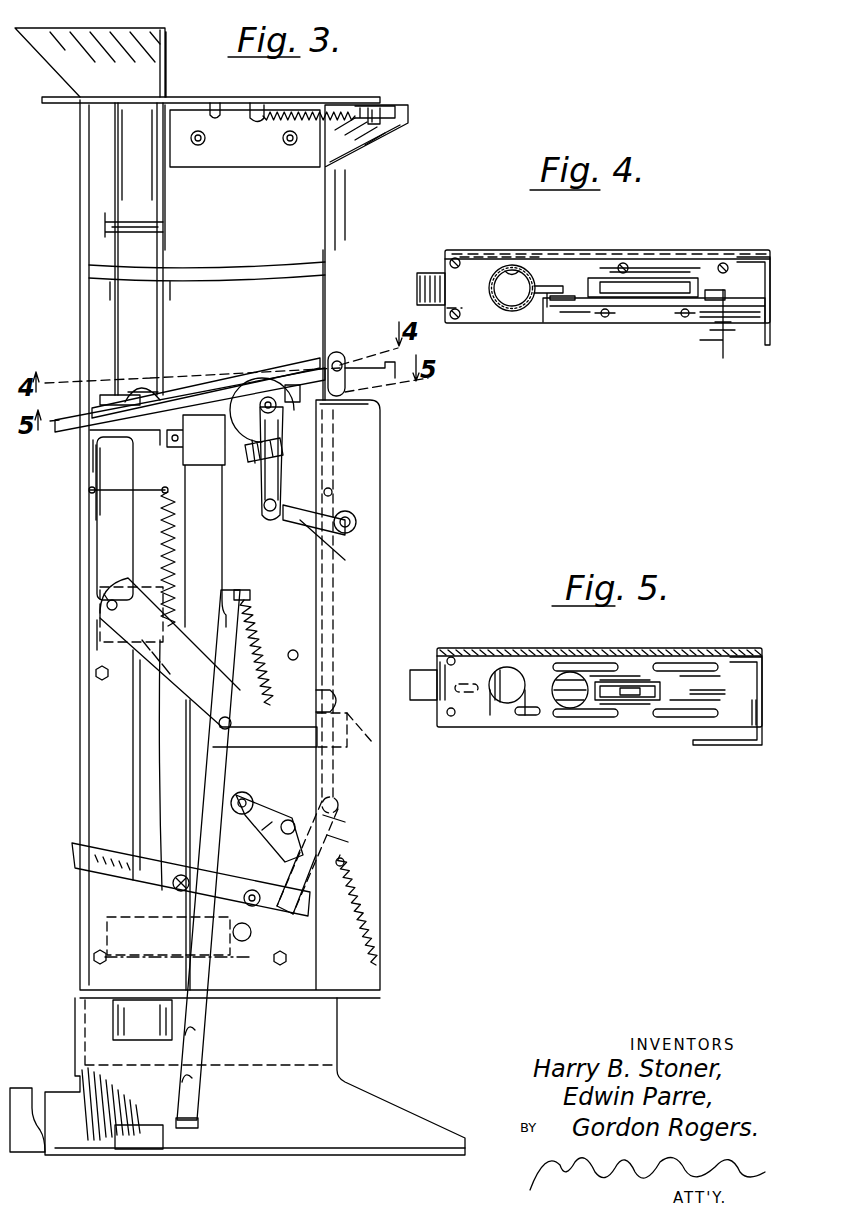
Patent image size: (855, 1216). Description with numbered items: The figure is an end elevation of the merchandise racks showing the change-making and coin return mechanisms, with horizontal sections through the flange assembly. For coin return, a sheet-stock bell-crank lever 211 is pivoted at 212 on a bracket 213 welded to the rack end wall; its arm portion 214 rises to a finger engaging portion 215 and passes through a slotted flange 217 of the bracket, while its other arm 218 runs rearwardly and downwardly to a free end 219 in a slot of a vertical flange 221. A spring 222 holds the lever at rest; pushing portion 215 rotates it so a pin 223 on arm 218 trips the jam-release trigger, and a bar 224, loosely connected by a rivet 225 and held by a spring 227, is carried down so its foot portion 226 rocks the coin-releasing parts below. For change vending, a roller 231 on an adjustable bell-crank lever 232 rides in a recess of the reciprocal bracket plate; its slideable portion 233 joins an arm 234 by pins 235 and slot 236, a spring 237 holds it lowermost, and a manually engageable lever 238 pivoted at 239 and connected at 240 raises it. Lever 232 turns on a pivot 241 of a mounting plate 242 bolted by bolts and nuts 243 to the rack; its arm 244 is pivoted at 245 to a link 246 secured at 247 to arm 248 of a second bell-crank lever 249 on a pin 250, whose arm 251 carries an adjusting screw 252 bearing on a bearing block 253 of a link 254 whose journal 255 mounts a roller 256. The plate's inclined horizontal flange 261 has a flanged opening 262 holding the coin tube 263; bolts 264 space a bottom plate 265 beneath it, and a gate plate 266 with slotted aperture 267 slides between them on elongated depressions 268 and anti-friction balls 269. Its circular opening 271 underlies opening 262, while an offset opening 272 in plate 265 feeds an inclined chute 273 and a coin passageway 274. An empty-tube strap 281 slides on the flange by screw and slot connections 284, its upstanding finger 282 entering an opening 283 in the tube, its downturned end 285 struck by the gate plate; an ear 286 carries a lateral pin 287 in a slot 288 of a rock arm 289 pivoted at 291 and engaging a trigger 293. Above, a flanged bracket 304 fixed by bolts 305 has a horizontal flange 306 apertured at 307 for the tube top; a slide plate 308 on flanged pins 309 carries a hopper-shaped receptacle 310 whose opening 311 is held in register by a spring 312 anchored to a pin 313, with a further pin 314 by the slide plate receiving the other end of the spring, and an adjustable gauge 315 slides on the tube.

In FIG. 3, the bell-crank lever 211 is at (92, 604).
In FIG. 3, the pivot 212 is at (105, 607).
In FIG. 3, the bracket 213 is at (97, 632).
In FIG. 3, the arm portion 214 is at (110, 533).
In FIG. 3, the finger engaging portion 215 is at (95, 487).
In FIG. 3, the flange 217 is at (105, 492).
In FIG. 3, the arm 218 is at (170, 680).
In FIG. 3, the free end 219 is at (350, 753).
In FIG. 3, the vertical flange 221 is at (353, 783).
In FIG. 3, the spring 222 is at (177, 580).
In FIG. 3, the pin 223 is at (302, 700).
In FIG. 3, the bar 224 is at (200, 1050).
In FIG. 3, the rivet 225 is at (222, 727).
In FIG. 3, the foot portion 226 is at (190, 1126).
In FIG. 3, the spring 227 is at (253, 632).
In FIG. 3, the roller 231 is at (279, 962).
In FIG. 3, the adjustable bell-crank lever 232 is at (278, 848).
In FIG. 3, the slideable portion 233 is at (300, 890).
In FIG. 3, the arm 234 is at (360, 845).
In FIG. 3, the pins 235 is at (347, 862).
In FIG. 3, the slot 236 is at (360, 823).
In FIG. 3, the spring 237 is at (378, 948).
In FIG. 3, the manually engageable lever 238 is at (93, 873).
In FIG. 3, the pivot 239 is at (181, 875).
In FIG. 3, the connection 240 is at (217, 912).
In FIG. 3, the pivot 241 is at (290, 820).
In FIG. 3, the mounting plate 242 is at (100, 783).
In FIG. 4, the mounting plate 242 is at (577, 253).
In FIG. 5, the mounting plate 242 is at (698, 657).
In FIG. 3, the bolts and nuts 243 is at (95, 676).
In FIG. 3, the arm 244 is at (266, 830).
In FIG. 3, the pivot connection 245 is at (231, 798).
In FIG. 3, the link 246 is at (290, 660).
In FIG. 3, the pivot 247 is at (357, 522).
In FIG. 3, the arm 248 is at (305, 527).
In FIG. 3, the second bell-crank lever 249 is at (308, 498).
In FIG. 3, the pin 250 is at (275, 515).
In FIG. 3, the arm 251 is at (264, 506).
In FIG. 3, the adjusting screw 252 is at (292, 362).
In FIG. 3, the bearing block 253 is at (278, 440).
In FIG. 3, the link 254 is at (293, 418).
In FIG. 3, the journal 255 is at (268, 397).
In FIG. 3, the roller 256 is at (292, 397).
In FIG. 4, the roller 256 is at (610, 277).
In FIG. 5, the roller 256 is at (648, 700).
In FIG. 3, the inclined horizontal flange 261 is at (95, 406).
In FIG. 3, the circular flanged opening 262 is at (117, 400).
In FIG. 3, the tube 263 is at (125, 292).
In FIG. 4, the tube 263 is at (500, 266).
In FIG. 4, the bolts 264 is at (457, 259).
In FIG. 3, the bottom plate 265 is at (93, 450).
In FIG. 5, the bottom plate 265 is at (451, 717).
In FIG. 3, the gate plate 266 is at (140, 395).
In FIG. 4, the gate plate 266 is at (432, 273).
In FIG. 5, the gate plate 266 is at (468, 672).
In FIG. 5, the slotted aperture 267 is at (645, 683).
In FIG. 5, the elongated depressions 268 is at (520, 716).
In FIG. 5, the anti-friction balls 269 is at (533, 792).
In FIG. 5, the circular opening 271 is at (512, 664).
In FIG. 5, the opening 272 is at (580, 706).
In FIG. 3, the inclined chute 273 is at (190, 452).
In FIG. 3, the coin passageway 274 is at (137, 748).
In FIG. 4, the strap 281 is at (677, 311).
In FIG. 3, the upstanding finger 282 is at (147, 405).
In FIG. 4, the upstanding finger 282 is at (553, 300).
In FIG. 4, the opening 283 is at (537, 282).
In FIG. 4, the screw and slot connections 284 is at (600, 316).
In FIG. 3, the downturned end 285 is at (400, 372).
In FIG. 4, the downturned end 285 is at (750, 303).
In FIG. 5, the downturned end 285 is at (755, 712).
In FIG. 4, the ear 286 is at (708, 290).
In FIG. 4, the lateral pin 287 is at (722, 358).
In FIG. 3, the slot 288 is at (340, 372).
In FIG. 3, the rock arm 289 is at (378, 398).
In FIG. 3, the pivot 291 is at (333, 492).
In FIG. 3, the trigger 293 is at (296, 652).
In FIG. 3, the flanged bracket 304 is at (315, 150).
In FIG. 3, the bolts 305 is at (285, 145).
In FIG. 3, the horizontal flange 306 is at (212, 103).
In FIG. 3, the aperture 307 is at (115, 115).
In FIG. 3, the slide plate 308 is at (266, 112).
In FIG. 3, the flanged pins 309 is at (378, 105).
In FIG. 3, the hopper-shaped receptacle 310 is at (160, 47).
In FIG. 3, the opening 311 is at (110, 98).
In FIG. 3, the spring 312 is at (355, 132).
In FIG. 3, the pin 313 is at (258, 105).
In FIG. 3, the hook 314 is at (382, 118).
In FIG. 3, the adjustable gauge 315 is at (105, 222).